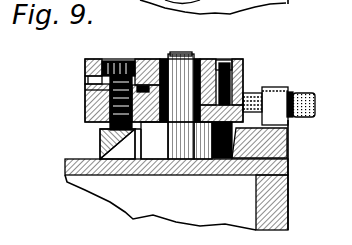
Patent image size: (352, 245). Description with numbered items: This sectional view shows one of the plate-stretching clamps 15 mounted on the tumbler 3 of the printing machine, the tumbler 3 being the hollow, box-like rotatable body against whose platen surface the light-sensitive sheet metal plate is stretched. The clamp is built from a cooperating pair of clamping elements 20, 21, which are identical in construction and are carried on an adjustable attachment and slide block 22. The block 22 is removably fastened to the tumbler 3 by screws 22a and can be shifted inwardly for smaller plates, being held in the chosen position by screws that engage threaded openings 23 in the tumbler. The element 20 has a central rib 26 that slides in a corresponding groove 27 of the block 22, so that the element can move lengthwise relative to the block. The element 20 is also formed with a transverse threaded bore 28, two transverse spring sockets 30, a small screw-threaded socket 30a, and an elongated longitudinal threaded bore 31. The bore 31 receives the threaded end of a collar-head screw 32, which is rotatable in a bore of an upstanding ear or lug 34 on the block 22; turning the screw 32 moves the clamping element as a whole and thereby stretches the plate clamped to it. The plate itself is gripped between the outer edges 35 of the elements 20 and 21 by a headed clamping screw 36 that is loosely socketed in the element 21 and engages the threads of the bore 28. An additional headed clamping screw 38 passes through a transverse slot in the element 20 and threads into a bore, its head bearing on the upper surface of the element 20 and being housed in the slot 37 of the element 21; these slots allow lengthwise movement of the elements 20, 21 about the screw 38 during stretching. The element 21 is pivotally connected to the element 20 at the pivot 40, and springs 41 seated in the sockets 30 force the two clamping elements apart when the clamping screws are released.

The tumbler 3 is at (283, 194).
The clamps 15 is at (243, 72).
The clamping element 20 is at (90, 107).
The clamping element 21 is at (85, 69).
The attachment and slide block 22 is at (276, 150).
The screws 22a is at (181, 178).
The threaded openings 23 is at (143, 88).
The central rib 26 is at (93, 132).
The groove 27 is at (279, 109).
The transverse threaded bore 28 is at (154, 140).
The transverse spring sockets 30 is at (86, 91).
The screw threaded socket 30a is at (246, 98).
The longitudinal threaded bore 31 is at (259, 143).
The collar-head screw 32 is at (298, 95).
The upstanding ear or lug 34 is at (275, 106).
The outer edges 35 is at (86, 84).
The headed clamping screw 36 is at (124, 60).
The slot 37 is at (205, 60).
The headed clamping screw 38 is at (180, 53).
The pivot 40 is at (233, 60).
The springs 41 is at (86, 122).